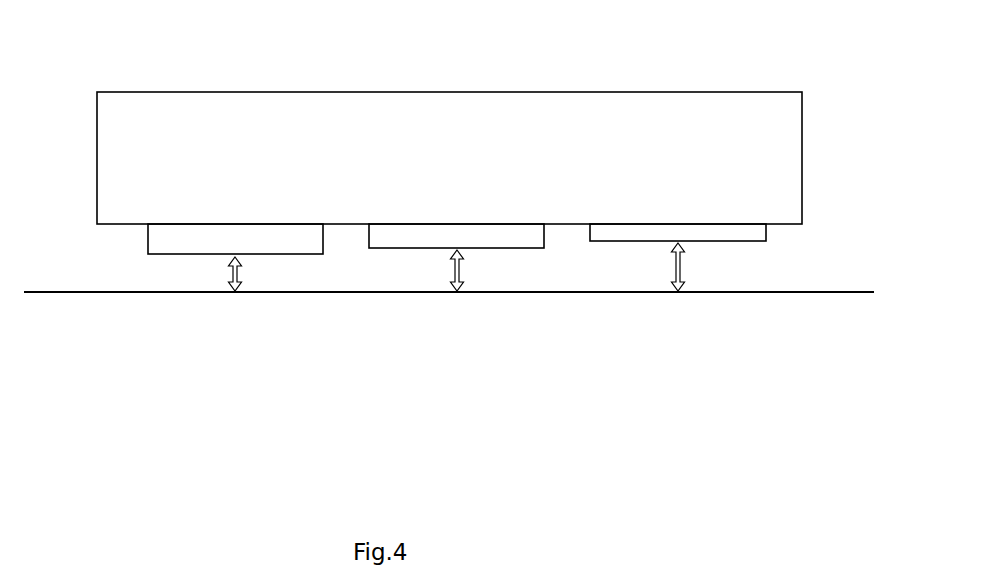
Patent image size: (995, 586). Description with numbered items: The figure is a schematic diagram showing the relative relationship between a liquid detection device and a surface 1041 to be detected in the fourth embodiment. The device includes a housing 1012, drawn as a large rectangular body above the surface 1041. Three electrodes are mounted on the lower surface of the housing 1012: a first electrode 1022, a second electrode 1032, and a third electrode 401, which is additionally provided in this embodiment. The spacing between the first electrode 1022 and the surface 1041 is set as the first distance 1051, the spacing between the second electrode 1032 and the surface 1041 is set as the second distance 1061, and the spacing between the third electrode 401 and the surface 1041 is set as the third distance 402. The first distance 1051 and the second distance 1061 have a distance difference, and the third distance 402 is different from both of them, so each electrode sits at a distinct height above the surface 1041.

The housing 1012 is at (653, 112).
The first electrode 1022 is at (195, 237).
The second electrode 1032 is at (432, 237).
The third electrode 401 is at (654, 230).
The surface to be detected 1041 is at (857, 292).
The first distance 1051 is at (240, 277).
The second distance 1061 is at (463, 272).
The third distance 402 is at (682, 257).